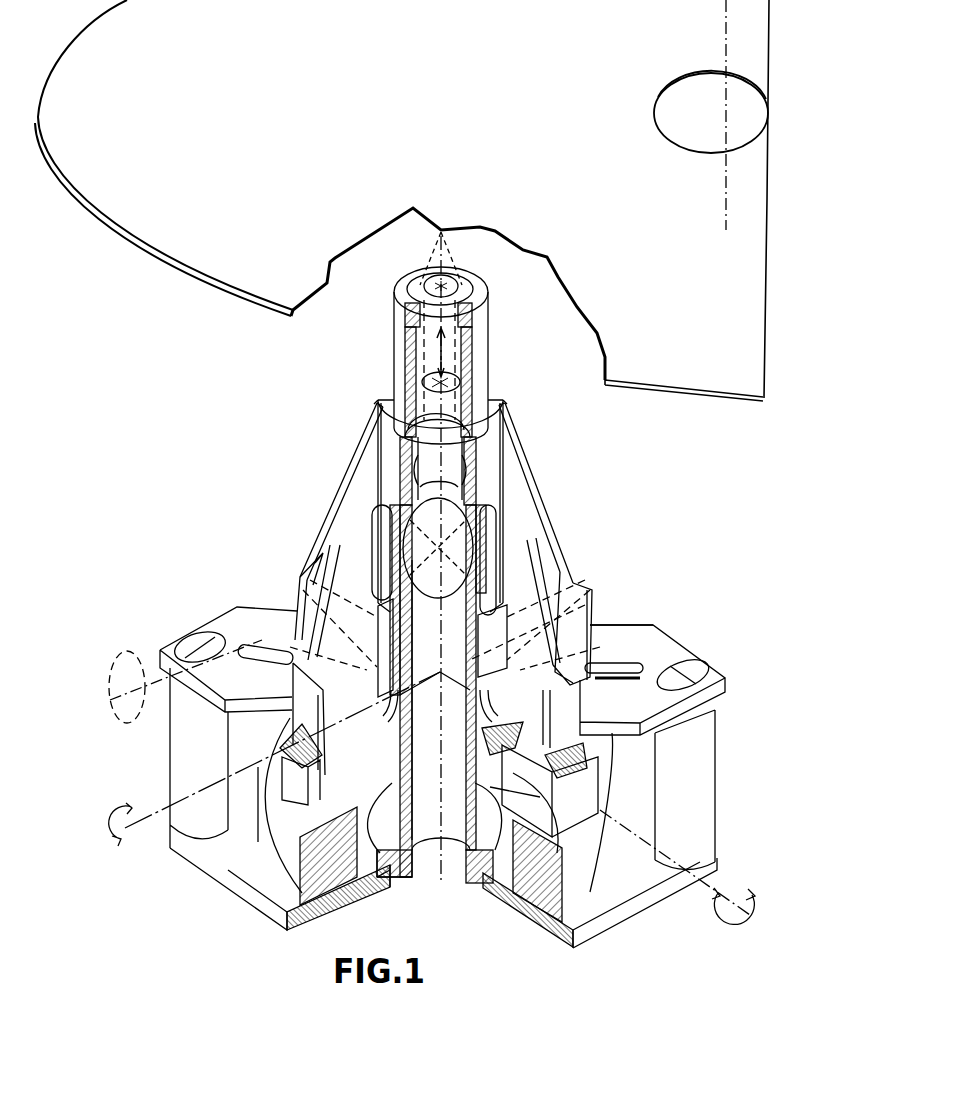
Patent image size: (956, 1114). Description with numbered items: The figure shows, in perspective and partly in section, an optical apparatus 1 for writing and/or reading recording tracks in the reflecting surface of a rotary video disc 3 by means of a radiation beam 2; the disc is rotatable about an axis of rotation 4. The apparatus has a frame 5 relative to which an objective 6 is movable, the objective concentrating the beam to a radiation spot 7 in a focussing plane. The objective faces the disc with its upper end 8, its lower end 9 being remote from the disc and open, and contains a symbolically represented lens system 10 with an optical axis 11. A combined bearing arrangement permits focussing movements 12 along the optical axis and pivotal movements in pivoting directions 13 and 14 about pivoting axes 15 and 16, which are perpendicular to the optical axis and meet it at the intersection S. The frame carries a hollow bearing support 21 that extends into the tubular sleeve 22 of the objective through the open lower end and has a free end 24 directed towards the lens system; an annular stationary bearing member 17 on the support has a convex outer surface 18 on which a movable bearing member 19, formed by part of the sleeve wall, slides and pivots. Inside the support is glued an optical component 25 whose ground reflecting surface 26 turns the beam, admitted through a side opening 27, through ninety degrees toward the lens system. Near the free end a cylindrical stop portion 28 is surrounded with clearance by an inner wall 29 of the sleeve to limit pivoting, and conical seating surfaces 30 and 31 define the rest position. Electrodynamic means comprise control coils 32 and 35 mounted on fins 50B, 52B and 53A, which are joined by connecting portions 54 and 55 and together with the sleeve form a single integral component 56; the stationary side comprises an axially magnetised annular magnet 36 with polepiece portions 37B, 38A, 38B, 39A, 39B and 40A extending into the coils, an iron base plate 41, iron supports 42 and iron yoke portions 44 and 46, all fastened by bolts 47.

The optical apparatus 1 is at (317, 501).
The radiation beam 2 is at (185, 679).
The rotary video disc 3 is at (681, 373).
The axis of rotation 4 is at (725, 14).
The frame 5 is at (686, 630).
The objective 6 is at (495, 408).
The radiation spot 7 is at (446, 224).
The upper end 8 is at (480, 288).
The lower end 9 is at (478, 728).
The lens system 10 is at (472, 338).
The optical axis 11 is at (405, 327).
The focussing movements 12 is at (440, 357).
The pivoting direction 13 is at (743, 894).
The pivoting direction 14 is at (110, 803).
The pivoting axis 15 is at (735, 892).
The pivoting axis 16 is at (150, 812).
The stationary bearing member 17 is at (475, 708).
The convex outer surface 18 is at (434, 605).
The movable bearing member 19 is at (423, 700).
The bearing support 21 is at (453, 835).
The tubular sleeve 22 is at (492, 490).
The free end 24 is at (478, 447).
The optical component 25 is at (451, 600).
The reflecting surface 26 is at (470, 556).
The opening 27 is at (398, 531).
The cylindrical stop portion 28 is at (478, 478).
The inner wall 29 is at (478, 465).
The conical seating surface 30 is at (400, 482).
The conical seating surface 31 is at (400, 468).
The control coil 32 is at (290, 740).
The control coil 35 is at (612, 748).
The annular magnet 36 is at (595, 885).
The polepiece portion 37B is at (282, 823).
The polepiece portion 38A is at (302, 578).
The polepiece portion 38B is at (302, 556).
The polepiece portion 39A is at (583, 583).
The polepiece portion 39B is at (590, 605).
The polepiece portion 40A is at (540, 797).
The iron base plate 41 is at (590, 937).
The iron support 42 is at (190, 750).
The iron yoke portion 44 is at (222, 628).
The iron yoke portion 46 is at (660, 656).
The bolt 47 is at (182, 640).
The fin 50B is at (355, 516).
The fin 52B is at (537, 515).
The fin 53A is at (560, 558).
The connecting portion 54 is at (282, 606).
The connecting portion 55 is at (300, 690).
The integral component 56 is at (572, 535).
The intersection S is at (435, 675).